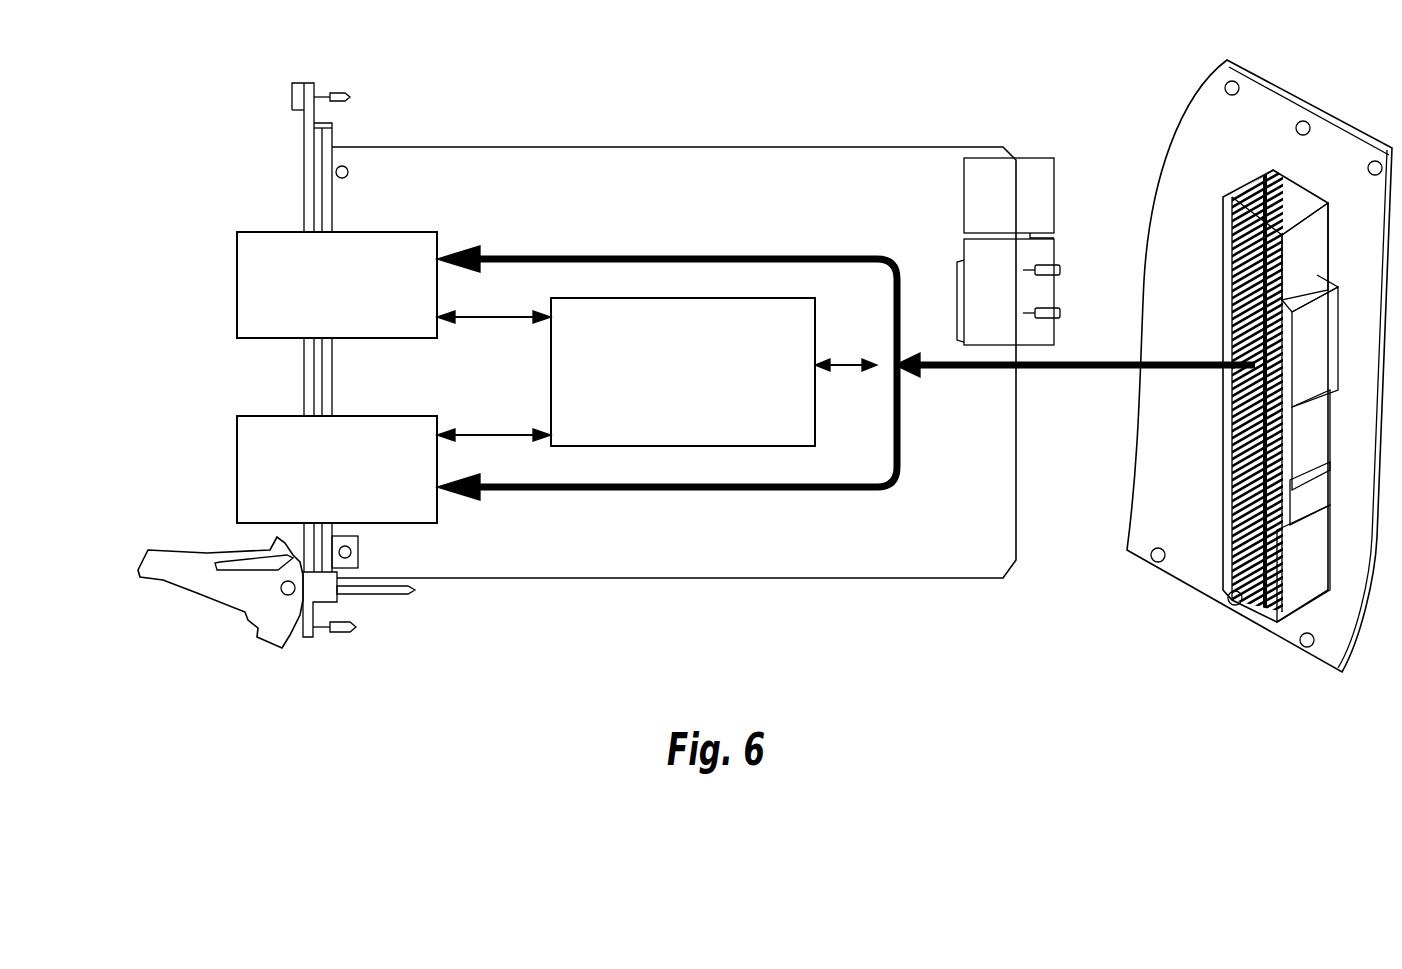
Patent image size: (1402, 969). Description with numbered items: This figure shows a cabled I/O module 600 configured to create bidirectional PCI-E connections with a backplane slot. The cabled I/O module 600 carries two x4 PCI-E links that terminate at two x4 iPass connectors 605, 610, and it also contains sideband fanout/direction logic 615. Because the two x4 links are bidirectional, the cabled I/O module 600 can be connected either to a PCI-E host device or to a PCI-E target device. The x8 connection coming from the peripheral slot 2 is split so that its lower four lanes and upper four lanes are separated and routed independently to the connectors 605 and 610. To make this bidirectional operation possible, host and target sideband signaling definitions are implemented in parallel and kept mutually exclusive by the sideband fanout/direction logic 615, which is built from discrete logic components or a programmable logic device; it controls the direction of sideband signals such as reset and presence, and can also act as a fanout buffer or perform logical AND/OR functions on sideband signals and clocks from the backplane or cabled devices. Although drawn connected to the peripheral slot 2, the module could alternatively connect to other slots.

The cabled I/O module 600 is at (798, 152).
The x4 iPass connector 605 is at (237, 257).
The x4 iPass connector 610 is at (237, 442).
The sideband fanout/direction logic 615 is at (792, 447).
The peripheral slot 2 is at (1262, 595).